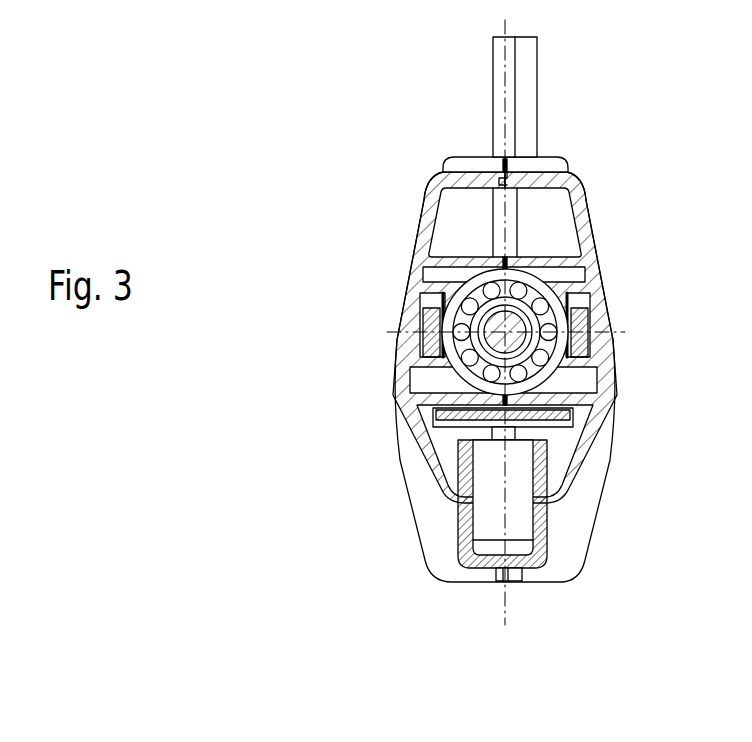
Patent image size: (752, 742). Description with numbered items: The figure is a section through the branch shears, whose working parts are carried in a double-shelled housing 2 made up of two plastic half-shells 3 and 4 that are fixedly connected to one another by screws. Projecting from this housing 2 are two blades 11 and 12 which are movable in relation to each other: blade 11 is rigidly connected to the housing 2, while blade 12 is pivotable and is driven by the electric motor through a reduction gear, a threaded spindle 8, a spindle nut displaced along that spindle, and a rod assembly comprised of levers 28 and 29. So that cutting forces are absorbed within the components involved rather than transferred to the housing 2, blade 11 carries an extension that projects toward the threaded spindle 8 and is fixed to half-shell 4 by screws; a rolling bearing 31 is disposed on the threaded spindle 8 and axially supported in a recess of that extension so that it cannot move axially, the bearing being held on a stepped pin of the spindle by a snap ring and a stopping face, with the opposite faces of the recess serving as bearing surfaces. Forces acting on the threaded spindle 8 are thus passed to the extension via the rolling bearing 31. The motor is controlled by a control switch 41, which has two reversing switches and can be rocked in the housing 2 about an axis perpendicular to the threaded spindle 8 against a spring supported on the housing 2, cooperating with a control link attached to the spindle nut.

The housing 2 is at (422, 562).
The plastic shell 3 is at (423, 447).
The plastic shell 4 is at (578, 452).
The threaded spindle 8 is at (491, 312).
The blade 11 is at (493, 70).
The blade 12 is at (537, 72).
The lever 28 is at (428, 325).
The lever 29 is at (582, 323).
The rolling bearing 31 is at (543, 277).
The control switch 41 is at (522, 568).